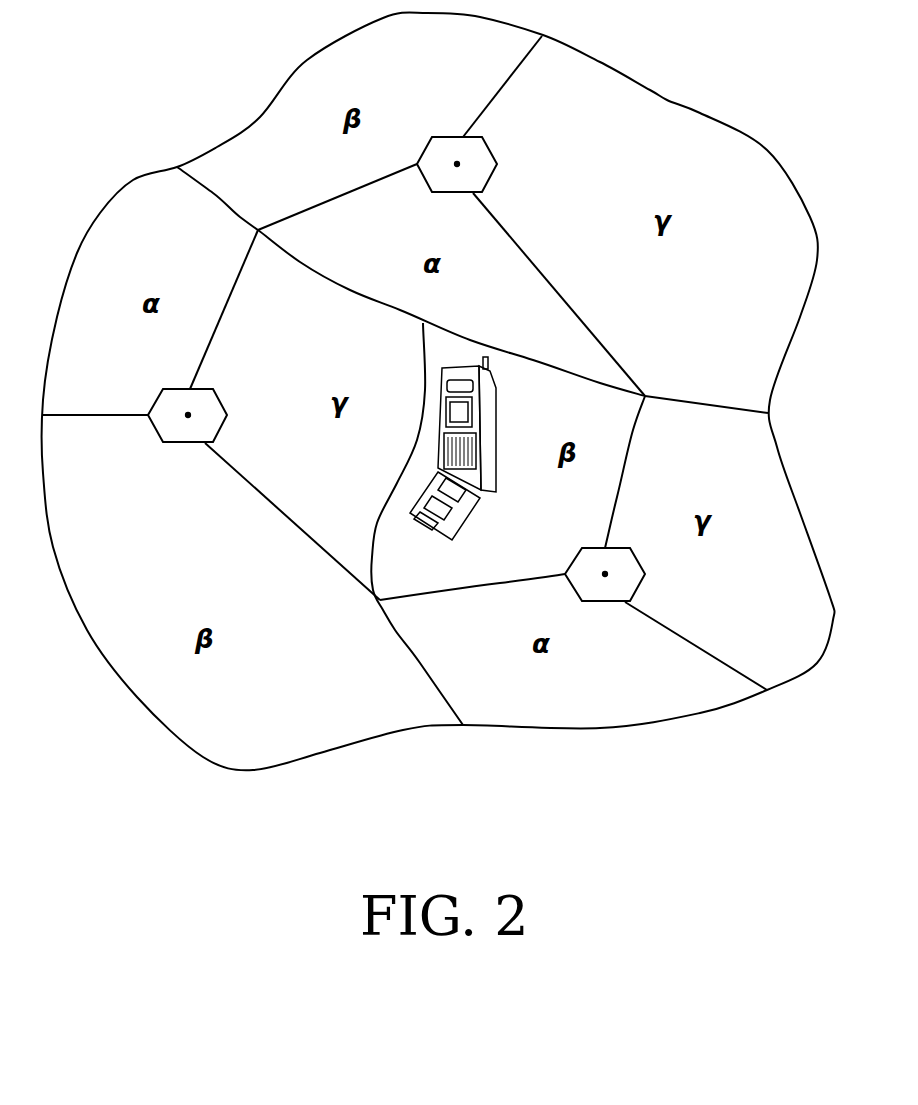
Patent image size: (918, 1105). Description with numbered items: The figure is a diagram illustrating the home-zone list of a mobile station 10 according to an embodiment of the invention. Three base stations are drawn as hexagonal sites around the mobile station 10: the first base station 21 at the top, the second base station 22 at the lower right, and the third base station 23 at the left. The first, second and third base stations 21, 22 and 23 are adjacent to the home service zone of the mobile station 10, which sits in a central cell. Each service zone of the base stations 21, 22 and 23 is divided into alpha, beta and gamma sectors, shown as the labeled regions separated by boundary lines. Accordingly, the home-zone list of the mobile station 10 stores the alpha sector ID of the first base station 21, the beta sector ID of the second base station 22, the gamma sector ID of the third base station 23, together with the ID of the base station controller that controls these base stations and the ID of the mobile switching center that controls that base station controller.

The mobile station 10 is at (470, 517).
The first base station 21 is at (497, 164).
The second base station 22 is at (645, 574).
The third base station 23 is at (227, 415).